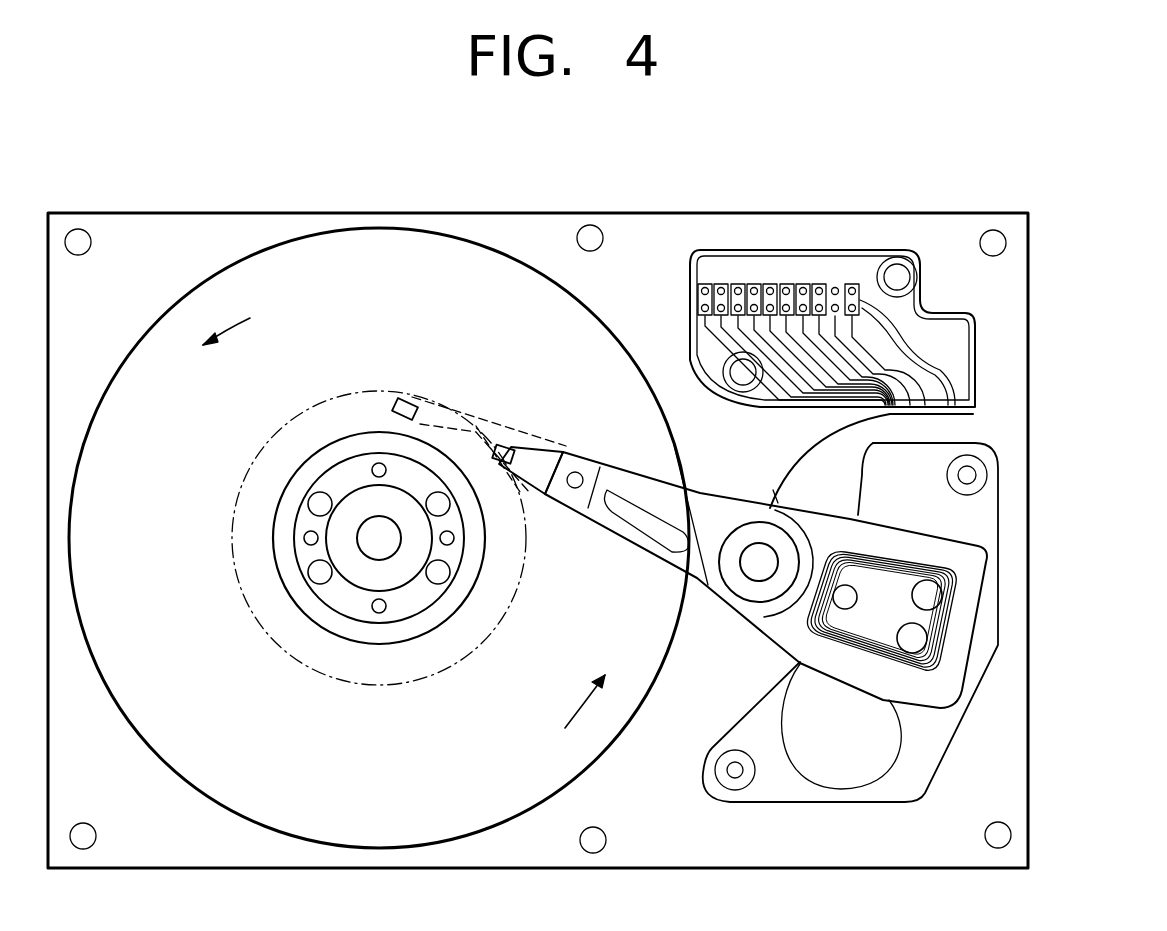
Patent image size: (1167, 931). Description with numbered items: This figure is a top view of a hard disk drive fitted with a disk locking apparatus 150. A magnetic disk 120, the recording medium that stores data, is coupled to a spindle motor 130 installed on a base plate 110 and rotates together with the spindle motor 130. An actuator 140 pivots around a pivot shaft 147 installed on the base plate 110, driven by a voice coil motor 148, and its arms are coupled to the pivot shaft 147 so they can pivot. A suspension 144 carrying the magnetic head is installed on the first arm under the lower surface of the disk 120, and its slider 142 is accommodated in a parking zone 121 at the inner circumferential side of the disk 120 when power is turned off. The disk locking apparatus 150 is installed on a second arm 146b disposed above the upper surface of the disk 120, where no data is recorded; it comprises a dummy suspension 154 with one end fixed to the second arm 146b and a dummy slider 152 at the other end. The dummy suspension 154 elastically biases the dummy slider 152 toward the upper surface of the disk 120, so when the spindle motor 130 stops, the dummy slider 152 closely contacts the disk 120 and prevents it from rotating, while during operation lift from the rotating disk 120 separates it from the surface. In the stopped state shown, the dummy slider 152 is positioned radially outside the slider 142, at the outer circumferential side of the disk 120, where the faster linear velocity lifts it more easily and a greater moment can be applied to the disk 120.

The base plate 110 is at (173, 226).
The magnetic disk 120 is at (432, 250).
The parking zone 121 is at (348, 665).
The spindle motor 130 is at (342, 522).
The actuator 140 is at (642, 529).
The slider 142 is at (395, 405).
The suspension 144 is at (437, 420).
The second arm 146b is at (612, 520).
The pivot shaft 147 is at (757, 562).
The voice coil motor 148 is at (893, 756).
The disk locking apparatus 150 is at (511, 399).
The dummy slider 152 is at (503, 445).
The dummy suspension 154 is at (543, 460).